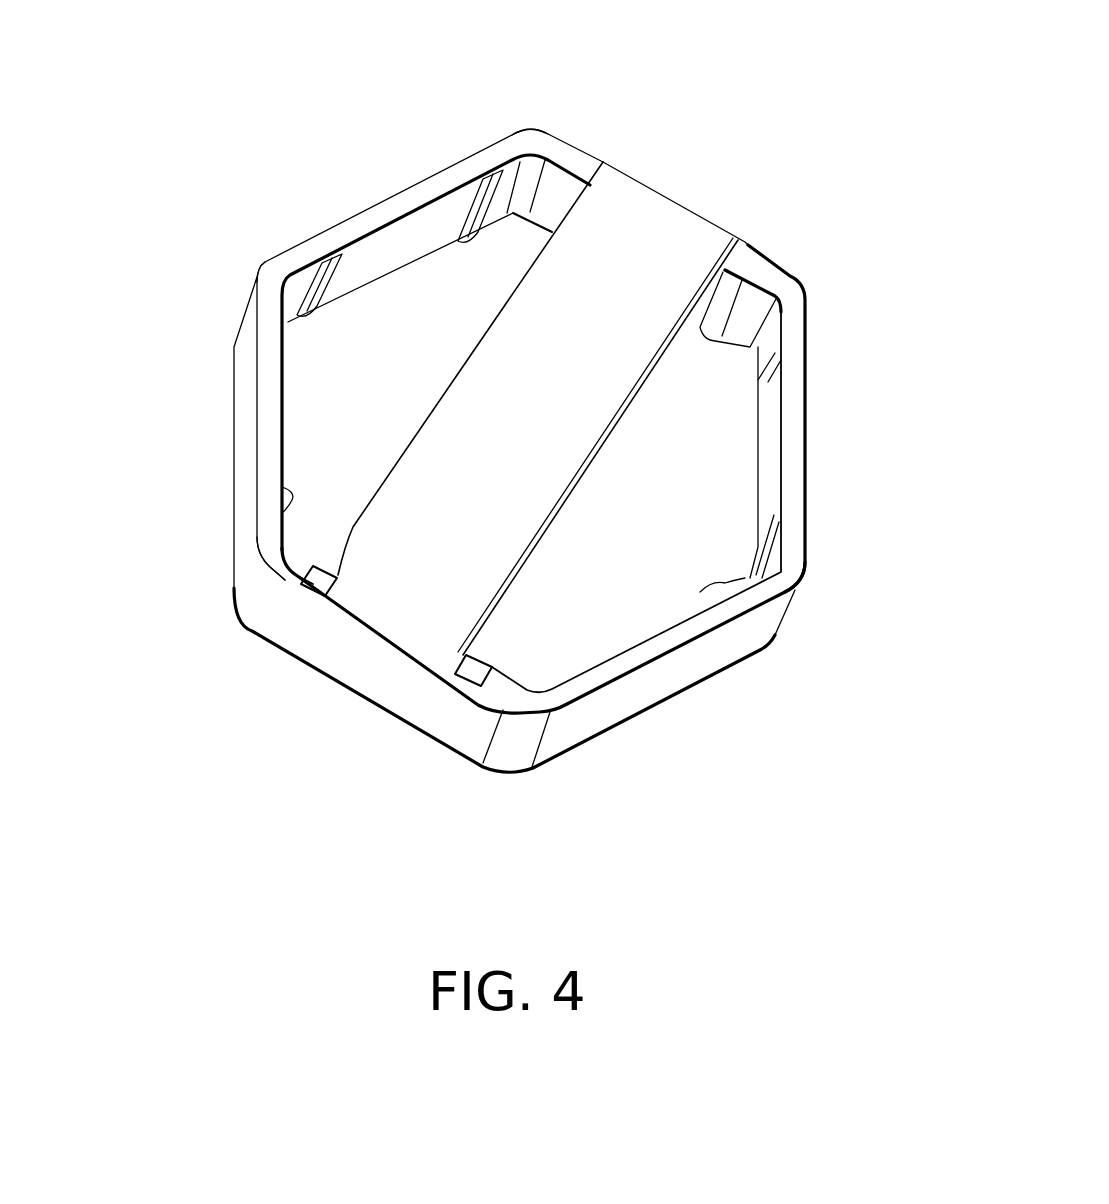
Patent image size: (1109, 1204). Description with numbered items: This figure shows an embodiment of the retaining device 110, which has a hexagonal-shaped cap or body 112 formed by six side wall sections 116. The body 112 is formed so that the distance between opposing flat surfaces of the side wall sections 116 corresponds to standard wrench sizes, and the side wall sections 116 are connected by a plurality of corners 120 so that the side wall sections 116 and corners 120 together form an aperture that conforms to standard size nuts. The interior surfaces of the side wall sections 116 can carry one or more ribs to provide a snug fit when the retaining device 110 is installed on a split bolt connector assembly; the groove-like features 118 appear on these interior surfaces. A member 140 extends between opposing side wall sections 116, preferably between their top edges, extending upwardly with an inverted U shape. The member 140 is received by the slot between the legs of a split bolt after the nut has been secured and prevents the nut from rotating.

The retaining device 110 is at (513, 494).
The hexagonal-shaped body 112 is at (493, 773).
The side wall sections 116 is at (242, 407).
The groove 118 is at (300, 490).
The corners 120 is at (543, 130).
The member 140 is at (640, 405).